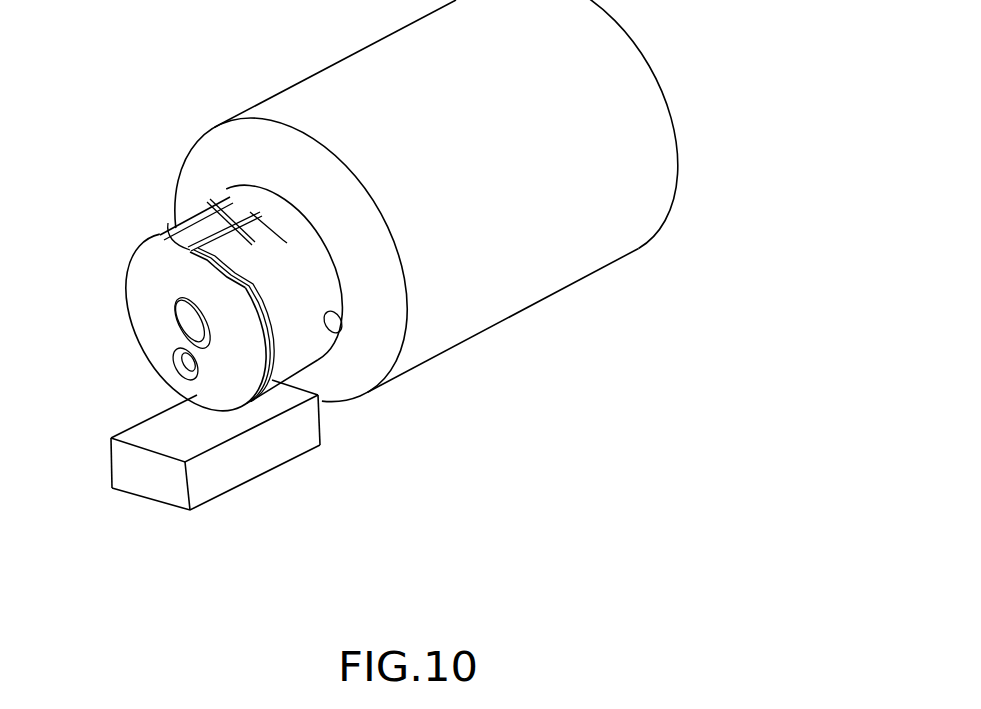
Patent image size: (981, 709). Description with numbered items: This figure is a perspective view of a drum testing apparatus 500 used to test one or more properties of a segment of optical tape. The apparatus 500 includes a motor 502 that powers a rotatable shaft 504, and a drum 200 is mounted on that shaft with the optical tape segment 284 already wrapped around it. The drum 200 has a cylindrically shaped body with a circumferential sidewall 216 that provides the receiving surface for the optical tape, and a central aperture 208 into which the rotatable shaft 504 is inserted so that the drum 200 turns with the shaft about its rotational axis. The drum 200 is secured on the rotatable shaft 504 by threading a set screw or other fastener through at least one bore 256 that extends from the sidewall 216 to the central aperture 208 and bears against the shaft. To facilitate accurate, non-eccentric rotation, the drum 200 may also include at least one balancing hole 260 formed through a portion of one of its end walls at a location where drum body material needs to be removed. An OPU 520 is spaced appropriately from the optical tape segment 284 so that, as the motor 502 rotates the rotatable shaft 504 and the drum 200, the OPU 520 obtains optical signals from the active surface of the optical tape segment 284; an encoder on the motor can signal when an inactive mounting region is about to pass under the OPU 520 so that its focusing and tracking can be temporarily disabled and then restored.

The drum testing apparatus 500 is at (234, 117).
The motor 502 is at (610, 237).
The sidewall 216 is at (323, 277).
The drum 200 is at (324, 363).
The optical tape segment 284 is at (282, 362).
The central aperture 208 is at (177, 327).
The rotatable shaft 504 is at (193, 310).
The balancing hole 260 is at (178, 367).
The bore 256 is at (337, 323).
The OPU 520 is at (155, 502).